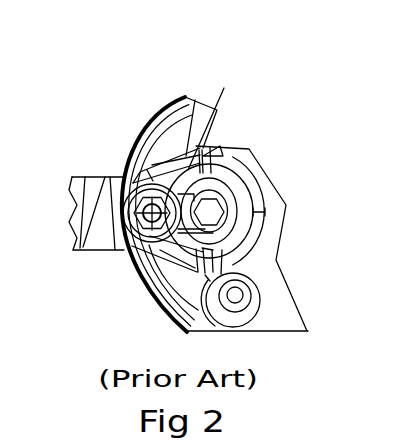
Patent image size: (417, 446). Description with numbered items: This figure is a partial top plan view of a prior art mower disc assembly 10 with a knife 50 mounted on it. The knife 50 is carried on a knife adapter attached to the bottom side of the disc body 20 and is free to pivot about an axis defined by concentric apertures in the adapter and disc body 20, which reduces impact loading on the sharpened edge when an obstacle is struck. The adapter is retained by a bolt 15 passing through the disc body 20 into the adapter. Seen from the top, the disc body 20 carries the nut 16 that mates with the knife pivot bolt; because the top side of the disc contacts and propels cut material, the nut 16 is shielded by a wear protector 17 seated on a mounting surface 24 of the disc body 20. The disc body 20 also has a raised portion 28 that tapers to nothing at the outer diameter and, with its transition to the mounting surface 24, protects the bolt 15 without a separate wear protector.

The mower disc assembly 10 is at (123, 112).
The disc body 20 is at (185, 95).
The raised portion 28 is at (223, 90).
The nut 16 is at (207, 165).
The wear protector 17 is at (222, 180).
The bolt 15 is at (210, 210).
The mounting surface 24 is at (250, 235).
The knife 50 is at (103, 222).